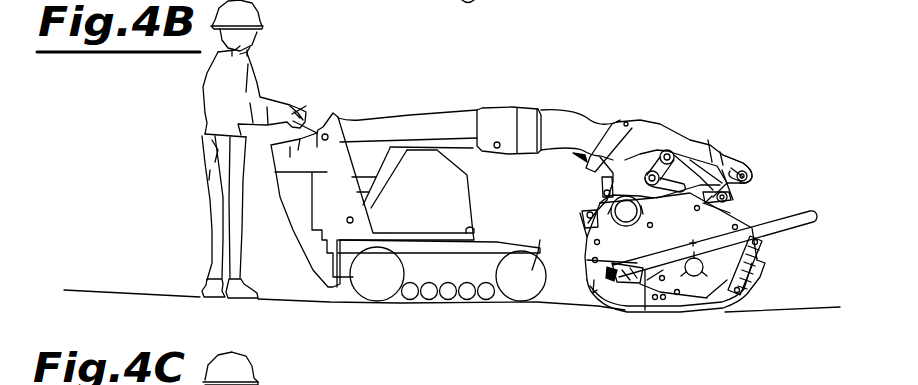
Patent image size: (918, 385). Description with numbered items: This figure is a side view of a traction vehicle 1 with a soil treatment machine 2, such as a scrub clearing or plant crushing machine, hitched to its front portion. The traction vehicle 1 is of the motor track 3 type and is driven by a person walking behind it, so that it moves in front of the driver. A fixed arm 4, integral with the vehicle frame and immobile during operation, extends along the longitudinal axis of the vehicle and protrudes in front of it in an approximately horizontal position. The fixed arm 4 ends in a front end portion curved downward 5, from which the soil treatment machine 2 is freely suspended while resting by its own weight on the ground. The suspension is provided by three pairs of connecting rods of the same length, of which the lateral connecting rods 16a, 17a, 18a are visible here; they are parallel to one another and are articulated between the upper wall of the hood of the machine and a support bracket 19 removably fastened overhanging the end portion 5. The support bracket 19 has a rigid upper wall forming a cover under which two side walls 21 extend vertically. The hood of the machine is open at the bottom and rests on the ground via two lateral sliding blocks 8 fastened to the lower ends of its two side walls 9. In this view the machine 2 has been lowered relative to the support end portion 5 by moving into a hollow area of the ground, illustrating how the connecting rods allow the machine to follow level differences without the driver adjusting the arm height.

The traction vehicle 1 is at (404, 0).
The soil treatment machine 2 is at (768, 286).
The motor track 3 is at (452, 253).
The fixed arm 4 is at (430, 115).
The front end portion curved downward 5 is at (563, 125).
The lateral sliding block 8 is at (742, 303).
The side wall 9 is at (705, 223).
The connecting rod 16a is at (720, 167).
The connecting rod 17a is at (685, 167).
The connecting rod 18a is at (592, 190).
The support bracket 19 is at (730, 153).
The side wall 21 is at (643, 135).